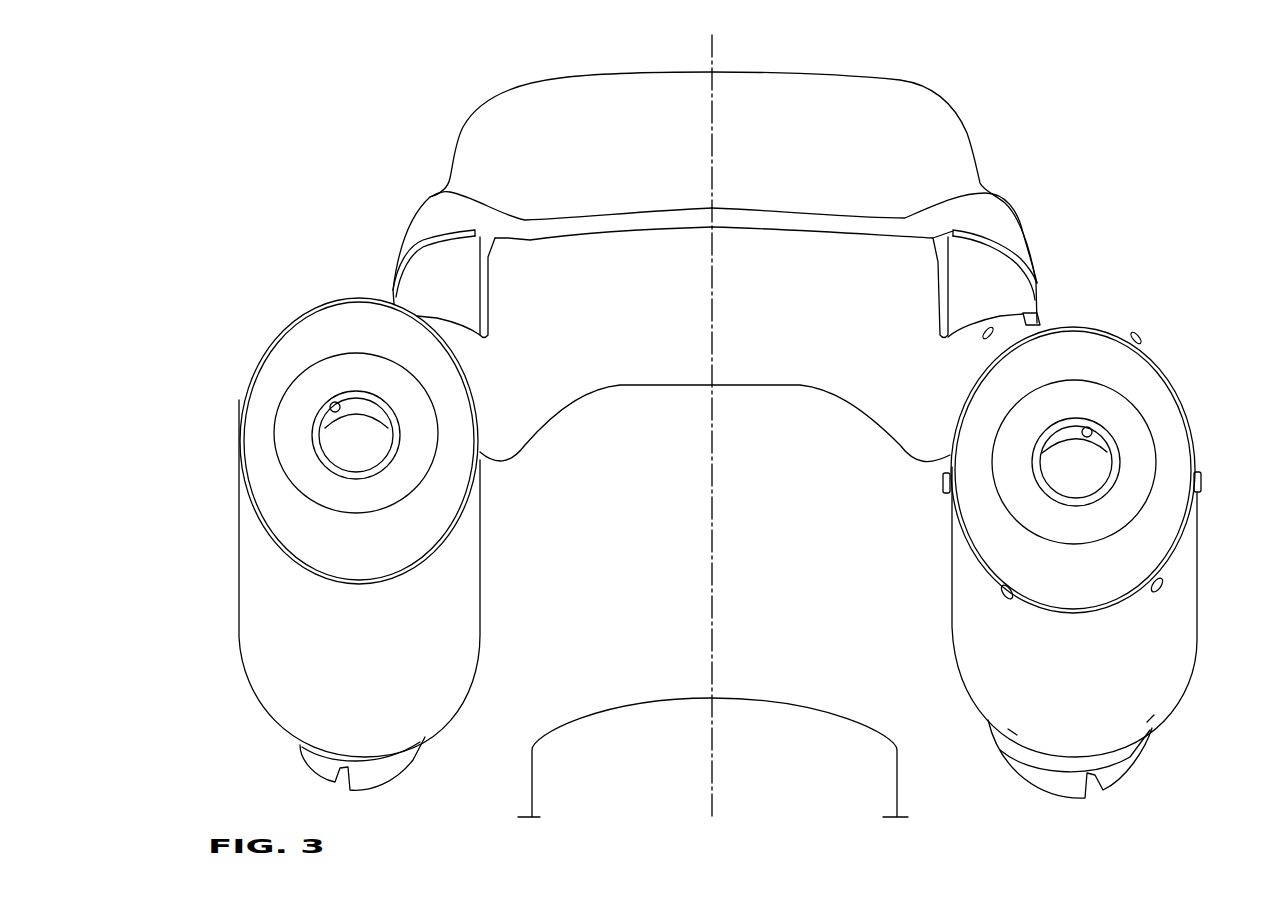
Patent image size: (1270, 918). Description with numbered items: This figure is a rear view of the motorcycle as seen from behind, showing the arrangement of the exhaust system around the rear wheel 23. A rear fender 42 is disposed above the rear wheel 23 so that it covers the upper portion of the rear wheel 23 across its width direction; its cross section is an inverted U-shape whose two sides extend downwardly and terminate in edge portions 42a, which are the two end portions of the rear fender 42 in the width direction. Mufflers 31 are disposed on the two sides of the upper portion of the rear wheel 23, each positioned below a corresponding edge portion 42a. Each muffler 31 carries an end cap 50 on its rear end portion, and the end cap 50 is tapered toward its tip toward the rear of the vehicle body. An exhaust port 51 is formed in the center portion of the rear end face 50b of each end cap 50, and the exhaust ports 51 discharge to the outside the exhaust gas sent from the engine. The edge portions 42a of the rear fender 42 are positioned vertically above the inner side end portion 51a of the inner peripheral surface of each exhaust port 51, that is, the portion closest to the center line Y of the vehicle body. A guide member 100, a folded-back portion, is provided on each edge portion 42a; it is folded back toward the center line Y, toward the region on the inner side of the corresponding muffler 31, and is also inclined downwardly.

The rear fender 42 is at (873, 117).
The edge portions of the rear fender 42a is at (393, 290).
The guide member 100 is at (423, 272).
The end cap 50 is at (257, 437).
The rear end face of the end cap 50b is at (352, 373).
The exhaust port 51 is at (330, 408).
The inner side end portion of the inner peripheral surface of the exhaust port 51a is at (387, 432).
The muffler 31 is at (253, 603).
The rear wheel 23 is at (880, 785).
The center line of the vehicle body Y is at (715, 653).